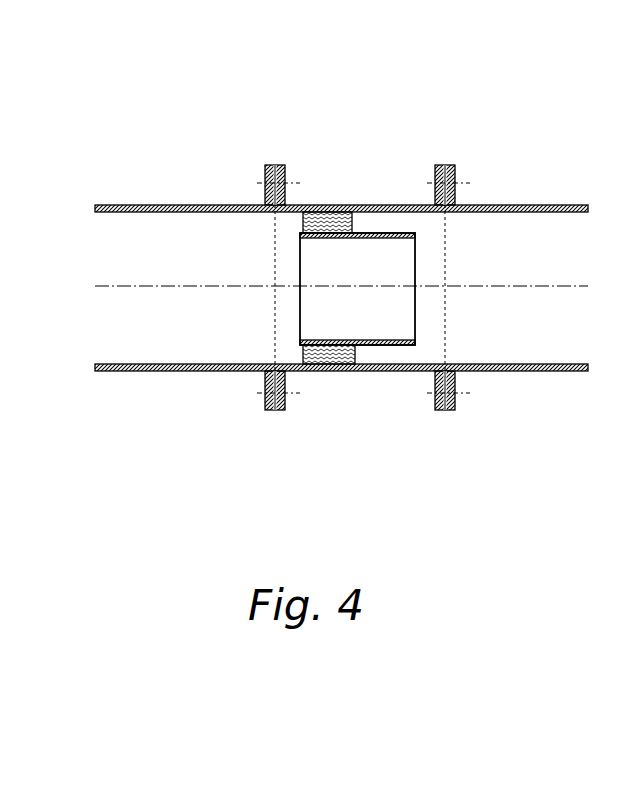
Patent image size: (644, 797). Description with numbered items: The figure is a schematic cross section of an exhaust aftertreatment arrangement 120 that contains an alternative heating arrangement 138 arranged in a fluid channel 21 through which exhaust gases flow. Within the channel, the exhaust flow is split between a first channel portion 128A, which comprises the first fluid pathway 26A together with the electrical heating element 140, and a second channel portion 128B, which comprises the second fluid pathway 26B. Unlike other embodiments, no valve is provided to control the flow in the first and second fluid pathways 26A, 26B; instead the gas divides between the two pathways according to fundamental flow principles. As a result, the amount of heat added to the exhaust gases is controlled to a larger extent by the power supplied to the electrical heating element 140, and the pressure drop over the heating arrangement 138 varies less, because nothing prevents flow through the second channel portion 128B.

The fluid channel 21 is at (180, 185).
The exhaust aftertreatment arrangement 120 is at (512, 138).
The first fluid pathway 26A is at (397, 217).
The second fluid pathway 26B is at (329, 318).
The electrical heating element 140 is at (333, 220).
The second channel portion 128B is at (422, 272).
The first channel portion 128A is at (418, 355).
The heating arrangement 138 is at (385, 428).